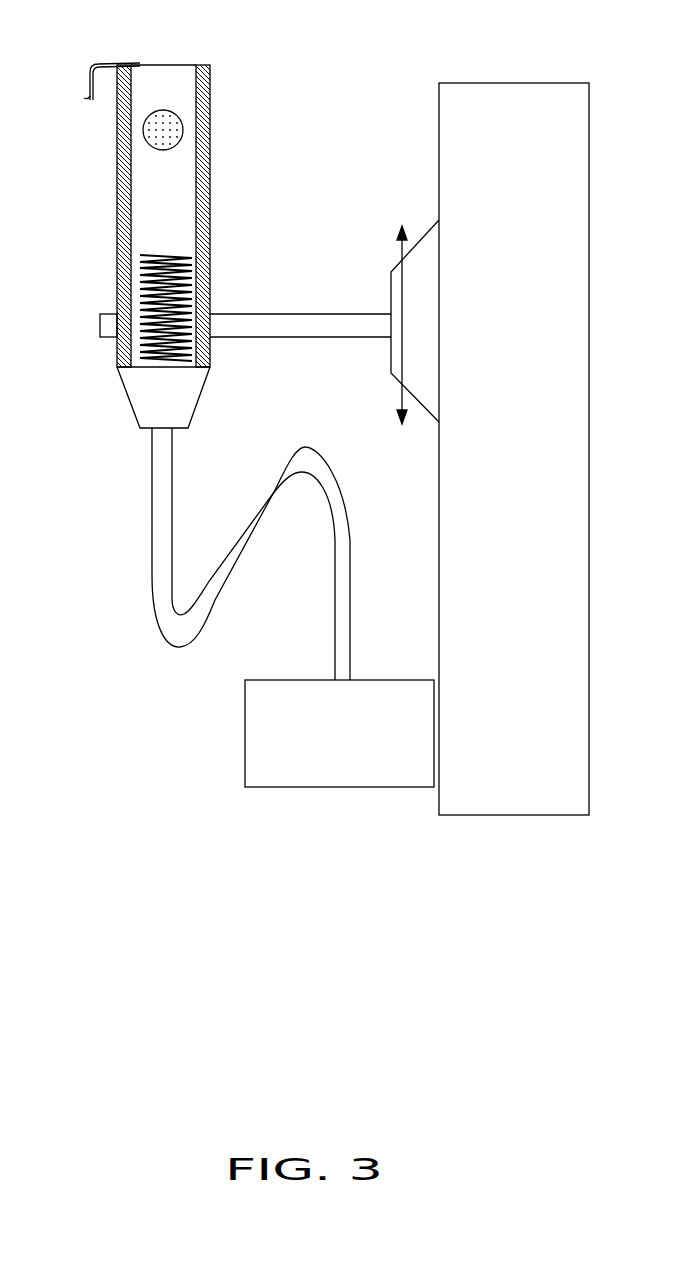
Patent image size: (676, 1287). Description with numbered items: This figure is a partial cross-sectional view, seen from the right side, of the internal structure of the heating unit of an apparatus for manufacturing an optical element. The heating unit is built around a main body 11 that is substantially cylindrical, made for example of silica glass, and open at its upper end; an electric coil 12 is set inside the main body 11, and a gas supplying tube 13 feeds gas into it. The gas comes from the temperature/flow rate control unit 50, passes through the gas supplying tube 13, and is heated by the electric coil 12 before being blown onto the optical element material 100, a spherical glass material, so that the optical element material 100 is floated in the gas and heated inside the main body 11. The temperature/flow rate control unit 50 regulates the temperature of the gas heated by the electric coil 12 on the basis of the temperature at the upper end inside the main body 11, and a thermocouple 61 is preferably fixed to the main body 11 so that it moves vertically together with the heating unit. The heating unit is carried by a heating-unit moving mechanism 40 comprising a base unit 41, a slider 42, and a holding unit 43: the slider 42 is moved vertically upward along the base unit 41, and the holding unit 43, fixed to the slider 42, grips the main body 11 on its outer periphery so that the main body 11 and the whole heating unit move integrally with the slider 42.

The main body 11 is at (131, 246).
The electric coil 12 is at (131, 308).
The gas supplying tube 13 is at (250, 578).
The heating-unit moving mechanism 40 is at (357, 307).
The base unit 41 is at (474, 440).
The slider 42 is at (410, 271).
The holding unit 43 is at (300, 285).
The temperature/flow rate control unit 50 is at (339, 778).
The thermocouple 61 is at (96, 55).
The optical element material 100 is at (214, 130).